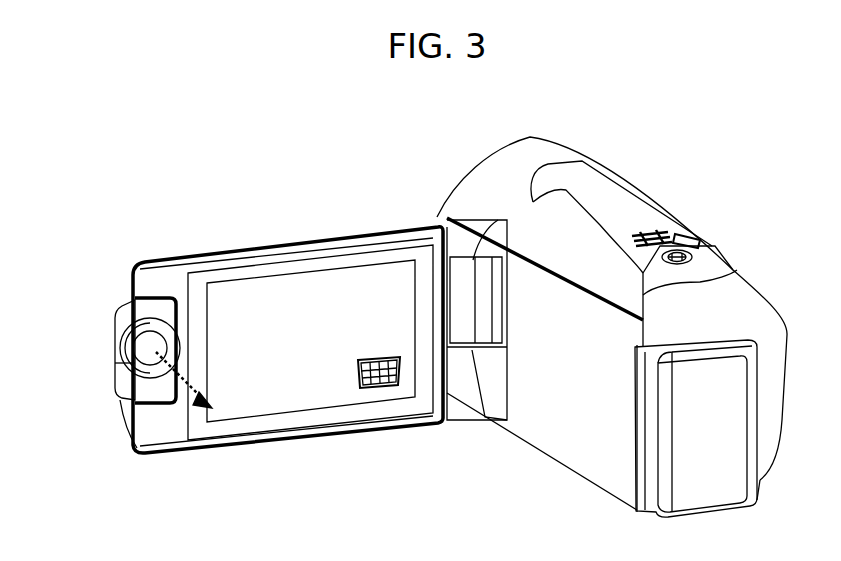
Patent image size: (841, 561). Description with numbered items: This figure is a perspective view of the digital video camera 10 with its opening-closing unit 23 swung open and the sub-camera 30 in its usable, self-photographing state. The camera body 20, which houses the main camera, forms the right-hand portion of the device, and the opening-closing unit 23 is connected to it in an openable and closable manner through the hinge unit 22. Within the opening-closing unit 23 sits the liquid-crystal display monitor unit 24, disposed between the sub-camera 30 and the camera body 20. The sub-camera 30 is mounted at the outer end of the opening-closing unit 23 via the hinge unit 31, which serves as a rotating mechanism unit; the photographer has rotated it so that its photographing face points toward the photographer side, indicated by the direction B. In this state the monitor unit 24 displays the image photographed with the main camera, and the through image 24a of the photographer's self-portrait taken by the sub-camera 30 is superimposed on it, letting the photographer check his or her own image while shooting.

The digital video camera 10 is at (493, 138).
The camera body 20 is at (625, 208).
The hinge unit 22 is at (467, 273).
The opening-closing unit 23 is at (397, 432).
The liquid-crystal display monitor unit 24 is at (278, 393).
The through image 24a is at (372, 380).
The sub-camera 30 is at (135, 367).
The hinge unit 31 is at (124, 313).